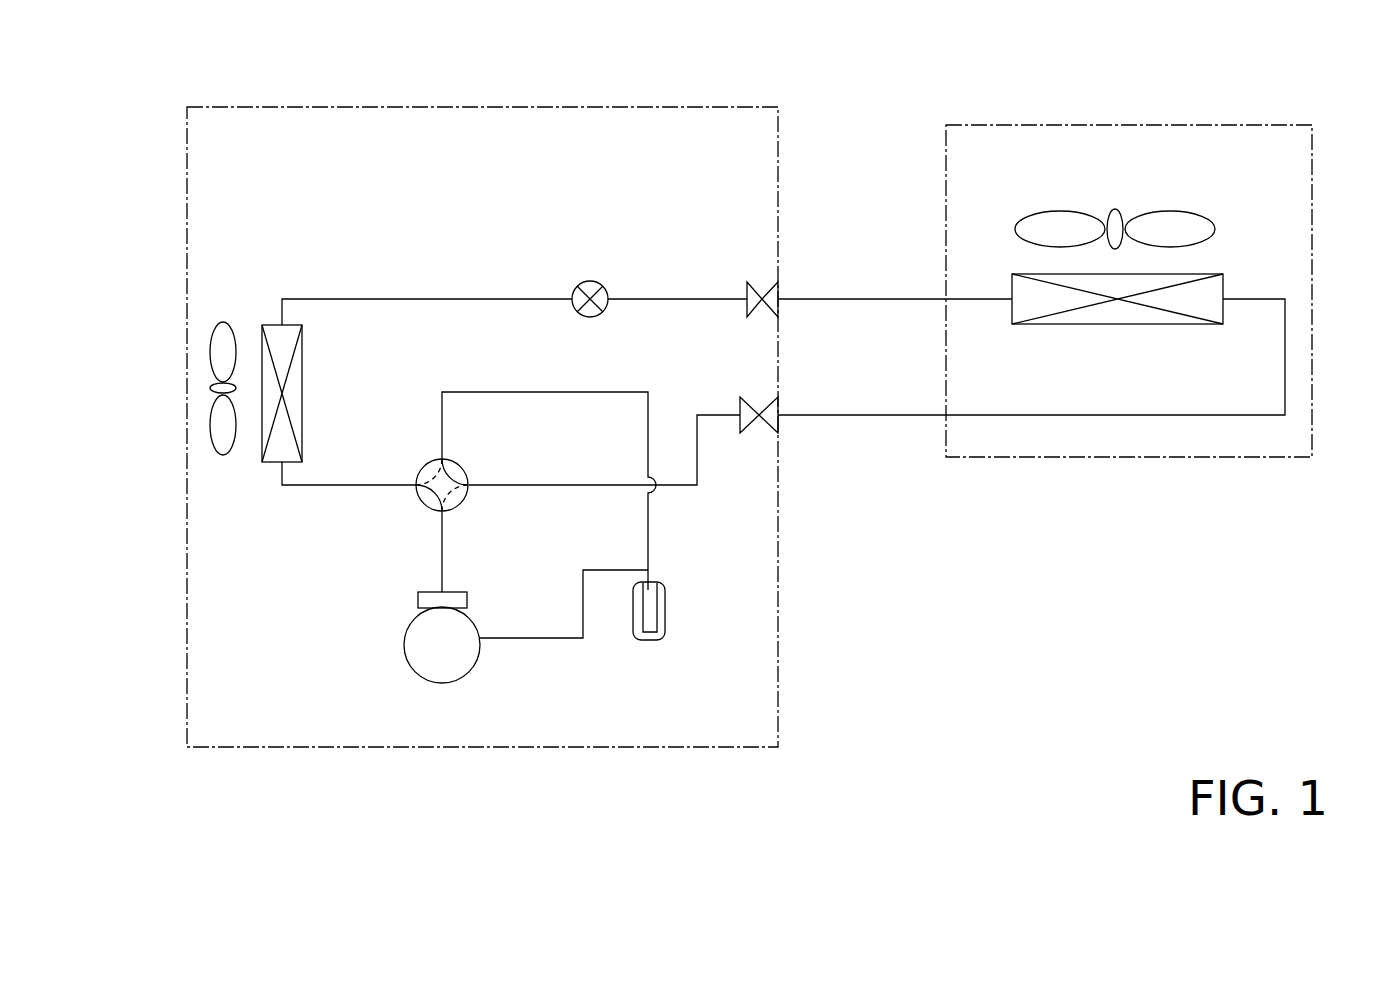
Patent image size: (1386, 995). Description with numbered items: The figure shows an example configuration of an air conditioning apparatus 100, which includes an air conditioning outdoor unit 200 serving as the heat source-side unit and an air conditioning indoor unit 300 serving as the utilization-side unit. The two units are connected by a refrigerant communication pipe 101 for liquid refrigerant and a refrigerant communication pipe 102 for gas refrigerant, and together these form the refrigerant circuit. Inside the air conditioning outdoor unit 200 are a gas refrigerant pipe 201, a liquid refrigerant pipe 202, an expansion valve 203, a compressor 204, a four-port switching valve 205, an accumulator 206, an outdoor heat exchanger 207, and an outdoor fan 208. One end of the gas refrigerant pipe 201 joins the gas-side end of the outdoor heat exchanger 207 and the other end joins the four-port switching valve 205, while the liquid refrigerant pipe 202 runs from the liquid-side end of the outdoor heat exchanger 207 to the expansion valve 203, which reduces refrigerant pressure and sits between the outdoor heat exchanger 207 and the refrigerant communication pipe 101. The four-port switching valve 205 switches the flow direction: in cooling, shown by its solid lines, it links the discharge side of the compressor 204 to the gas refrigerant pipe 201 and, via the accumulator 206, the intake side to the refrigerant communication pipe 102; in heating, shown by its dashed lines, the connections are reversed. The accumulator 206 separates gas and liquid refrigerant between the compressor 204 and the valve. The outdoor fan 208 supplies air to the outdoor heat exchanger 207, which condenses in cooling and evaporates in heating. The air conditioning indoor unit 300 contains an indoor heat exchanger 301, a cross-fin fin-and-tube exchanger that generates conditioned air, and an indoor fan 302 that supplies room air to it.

The air conditioning apparatus 100 is at (838, 120).
The refrigerant communication pipe 101 is at (835, 298).
The refrigerant communication pipe 102 is at (882, 417).
The air conditioning outdoor unit 200 is at (615, 105).
The gas refrigerant pipe 201 is at (282, 472).
The liquid refrigerant pipe 202 is at (280, 308).
The expansion valve 203 is at (580, 282).
The compressor 204 is at (405, 662).
The four-port switching valve 205 is at (413, 502).
The accumulator 206 is at (667, 608).
The outdoor heat exchanger 207 is at (305, 357).
The outdoor fan 208 is at (210, 323).
The air conditioning indoor unit 300 is at (1200, 123).
The indoor heat exchanger 301 is at (1205, 275).
The indoor fan 302 is at (1200, 212).